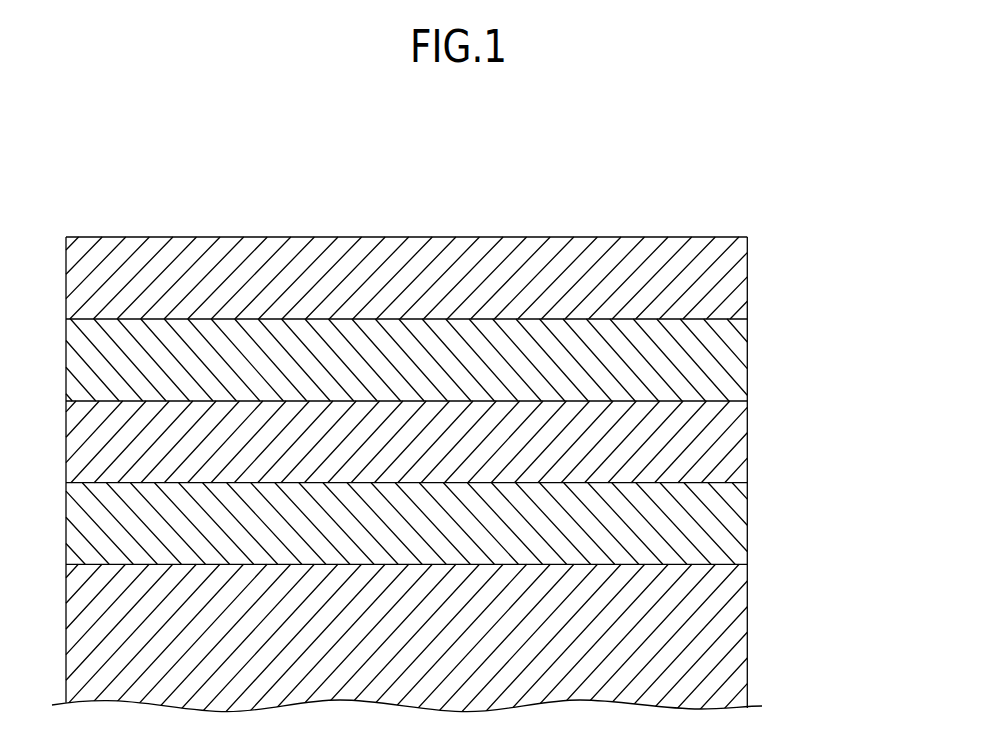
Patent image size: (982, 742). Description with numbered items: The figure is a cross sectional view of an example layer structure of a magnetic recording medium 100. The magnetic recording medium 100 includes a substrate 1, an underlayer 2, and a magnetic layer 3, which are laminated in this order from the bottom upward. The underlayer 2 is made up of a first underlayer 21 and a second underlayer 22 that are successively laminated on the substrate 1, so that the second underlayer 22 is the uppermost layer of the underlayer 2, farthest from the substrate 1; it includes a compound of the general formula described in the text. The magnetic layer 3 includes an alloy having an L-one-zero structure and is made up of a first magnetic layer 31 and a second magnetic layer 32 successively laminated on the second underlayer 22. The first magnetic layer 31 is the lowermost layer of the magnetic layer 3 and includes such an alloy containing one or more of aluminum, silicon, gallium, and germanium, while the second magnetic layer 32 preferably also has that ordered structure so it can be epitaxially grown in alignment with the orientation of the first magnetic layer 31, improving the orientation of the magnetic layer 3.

The magnetic recording medium 100 is at (463, 432).
The substrate 1 is at (737, 633).
The underlayer 2 is at (470, 481).
The first underlayer 21 is at (441, 524).
The second underlayer 22 is at (738, 440).
The magnetic layer 3 is at (470, 314).
The first magnetic layer 31 is at (441, 360).
The second magnetic layer 32 is at (737, 277).